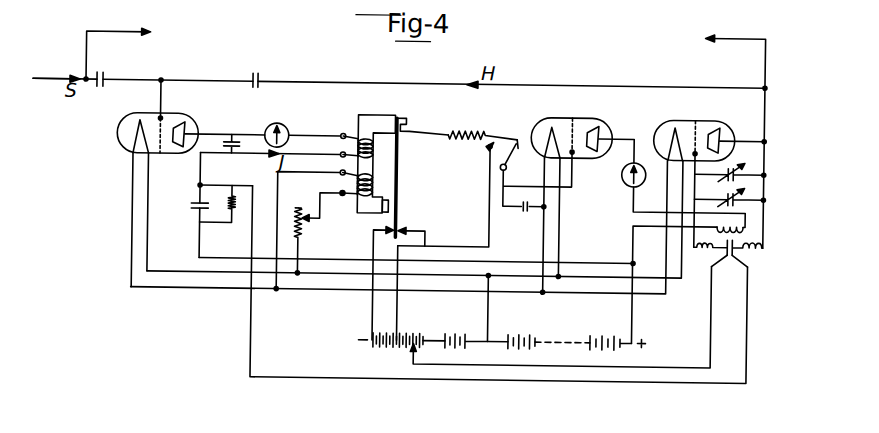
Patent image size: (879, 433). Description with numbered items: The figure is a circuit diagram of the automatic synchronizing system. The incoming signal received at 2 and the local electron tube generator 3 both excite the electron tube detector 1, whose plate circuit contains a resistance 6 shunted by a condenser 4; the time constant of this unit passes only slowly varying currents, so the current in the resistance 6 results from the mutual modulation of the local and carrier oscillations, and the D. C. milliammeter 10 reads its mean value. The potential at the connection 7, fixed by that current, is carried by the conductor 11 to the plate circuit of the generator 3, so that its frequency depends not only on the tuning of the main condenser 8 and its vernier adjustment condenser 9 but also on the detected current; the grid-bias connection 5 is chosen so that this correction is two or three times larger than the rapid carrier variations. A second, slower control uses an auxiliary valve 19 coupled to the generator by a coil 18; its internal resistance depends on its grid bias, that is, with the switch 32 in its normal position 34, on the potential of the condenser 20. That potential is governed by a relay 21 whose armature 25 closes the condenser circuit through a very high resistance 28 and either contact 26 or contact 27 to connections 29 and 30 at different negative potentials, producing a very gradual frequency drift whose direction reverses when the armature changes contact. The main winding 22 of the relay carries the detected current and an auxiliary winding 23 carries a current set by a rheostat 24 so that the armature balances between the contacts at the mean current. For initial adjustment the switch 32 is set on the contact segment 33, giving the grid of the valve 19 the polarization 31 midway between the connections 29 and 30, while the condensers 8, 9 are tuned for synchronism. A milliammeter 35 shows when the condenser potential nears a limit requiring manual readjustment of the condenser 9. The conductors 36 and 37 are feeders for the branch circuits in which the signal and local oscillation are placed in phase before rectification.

The electron tube detector 1 is at (182, 117).
The signal receiving point 2 is at (55, 81).
The local electron tube generator 3 is at (728, 120).
The condenser 4 is at (197, 206).
The grid-bias connection 5 is at (414, 357).
The resistance 6 is at (225, 205).
The connection 7 is at (240, 184).
The main condenser 8 is at (728, 180).
The vernier adjustment condenser 9 is at (728, 190).
The D. C. milliammeter 10 is at (290, 119).
The conductor 11 is at (277, 374).
The coil 18 is at (748, 220).
The auxiliary valve 19 is at (601, 124).
The condenser 20 is at (524, 207).
The relay 21 is at (377, 163).
The main winding 22 is at (364, 140).
The auxiliary winding 23 is at (364, 179).
The rheostat 24 is at (305, 231).
The armature 25 is at (399, 172).
The contact 26 is at (386, 283).
The contact 27 is at (410, 225).
The very high resistance 28 is at (482, 123).
The connection 29 is at (373, 334).
The connection 30 is at (427, 334).
The polarization 31 is at (400, 334).
The switch 32 is at (509, 162).
The contact segment 33 is at (488, 144).
The normal position 34 is at (518, 135).
The milliammeter 35 is at (623, 174).
The conductor 36 is at (112, 32).
The conductor 37 is at (734, 34).